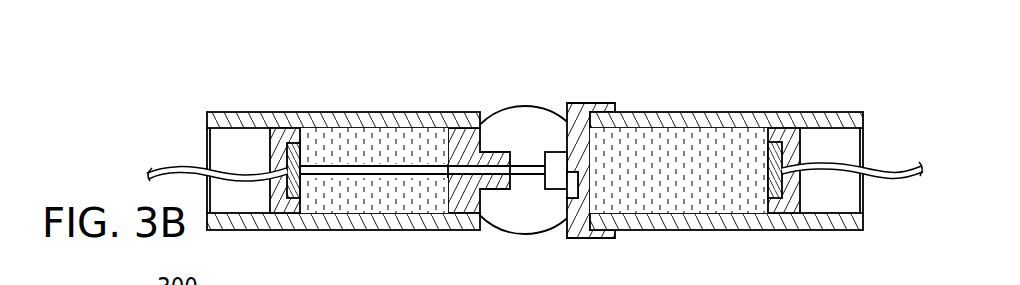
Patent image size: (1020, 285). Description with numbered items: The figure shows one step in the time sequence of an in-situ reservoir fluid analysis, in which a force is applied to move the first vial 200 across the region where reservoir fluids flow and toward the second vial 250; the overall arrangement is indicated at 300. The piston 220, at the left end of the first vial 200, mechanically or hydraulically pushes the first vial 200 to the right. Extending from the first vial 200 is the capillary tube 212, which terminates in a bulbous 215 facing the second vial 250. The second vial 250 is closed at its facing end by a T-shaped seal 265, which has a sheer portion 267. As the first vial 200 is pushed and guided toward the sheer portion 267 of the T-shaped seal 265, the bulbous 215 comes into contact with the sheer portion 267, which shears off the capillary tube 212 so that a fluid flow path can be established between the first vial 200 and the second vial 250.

The actuator assembly 300 is at (535, 144).
The first vial 200 is at (376, 128).
The piston 220 is at (273, 149).
The capillary tube 212 is at (504, 150).
The bulbous 215 is at (556, 190).
The T-shaped seal 265 is at (580, 103).
The sheer portion 267 is at (577, 190).
The second vial 250 is at (811, 91).